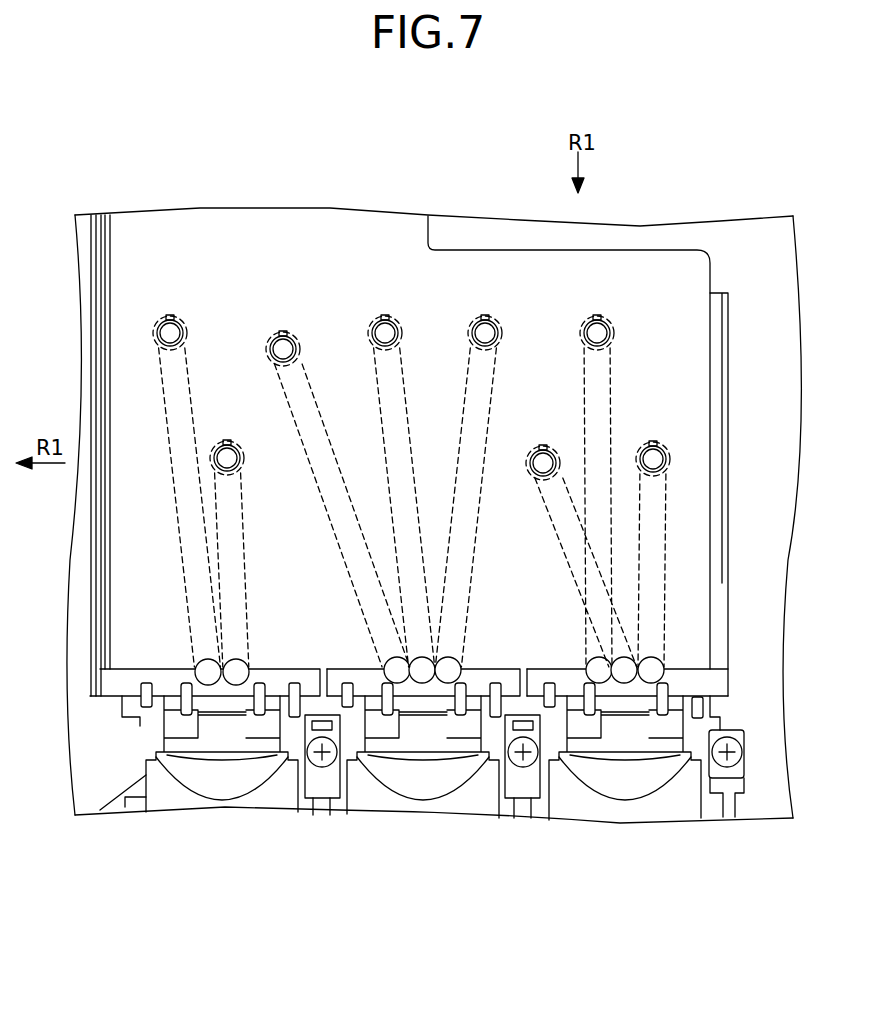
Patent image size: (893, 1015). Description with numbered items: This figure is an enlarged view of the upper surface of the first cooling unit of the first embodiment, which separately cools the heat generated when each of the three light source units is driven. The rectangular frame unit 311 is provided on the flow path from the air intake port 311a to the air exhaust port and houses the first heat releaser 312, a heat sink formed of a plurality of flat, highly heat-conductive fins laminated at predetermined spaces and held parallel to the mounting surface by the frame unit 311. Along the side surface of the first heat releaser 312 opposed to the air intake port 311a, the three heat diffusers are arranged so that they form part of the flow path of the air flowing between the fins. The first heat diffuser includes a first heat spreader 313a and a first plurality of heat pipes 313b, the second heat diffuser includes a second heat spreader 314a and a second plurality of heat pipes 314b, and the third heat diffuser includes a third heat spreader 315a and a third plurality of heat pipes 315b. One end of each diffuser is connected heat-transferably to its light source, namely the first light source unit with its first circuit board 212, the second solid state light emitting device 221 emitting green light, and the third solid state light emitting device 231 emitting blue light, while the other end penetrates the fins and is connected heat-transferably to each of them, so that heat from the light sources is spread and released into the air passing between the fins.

The frame unit 311 is at (715, 308).
The air intake port 311a is at (458, 222).
The first heat releaser 312 is at (298, 232).
The first heat spreader 313a is at (567, 682).
The second heat spreader 314a is at (363, 682).
The third heat spreader 315a is at (113, 680).
The first plurality of heat pipes 313b is at (611, 388).
The second plurality of heat pipes 314b is at (317, 407).
The third plurality of heat pipes 315b is at (190, 397).
The first circuit board 212 is at (623, 712).
The second solid state light emitting device 221 is at (423, 712).
The third solid state light emitting device 231 is at (223, 712).